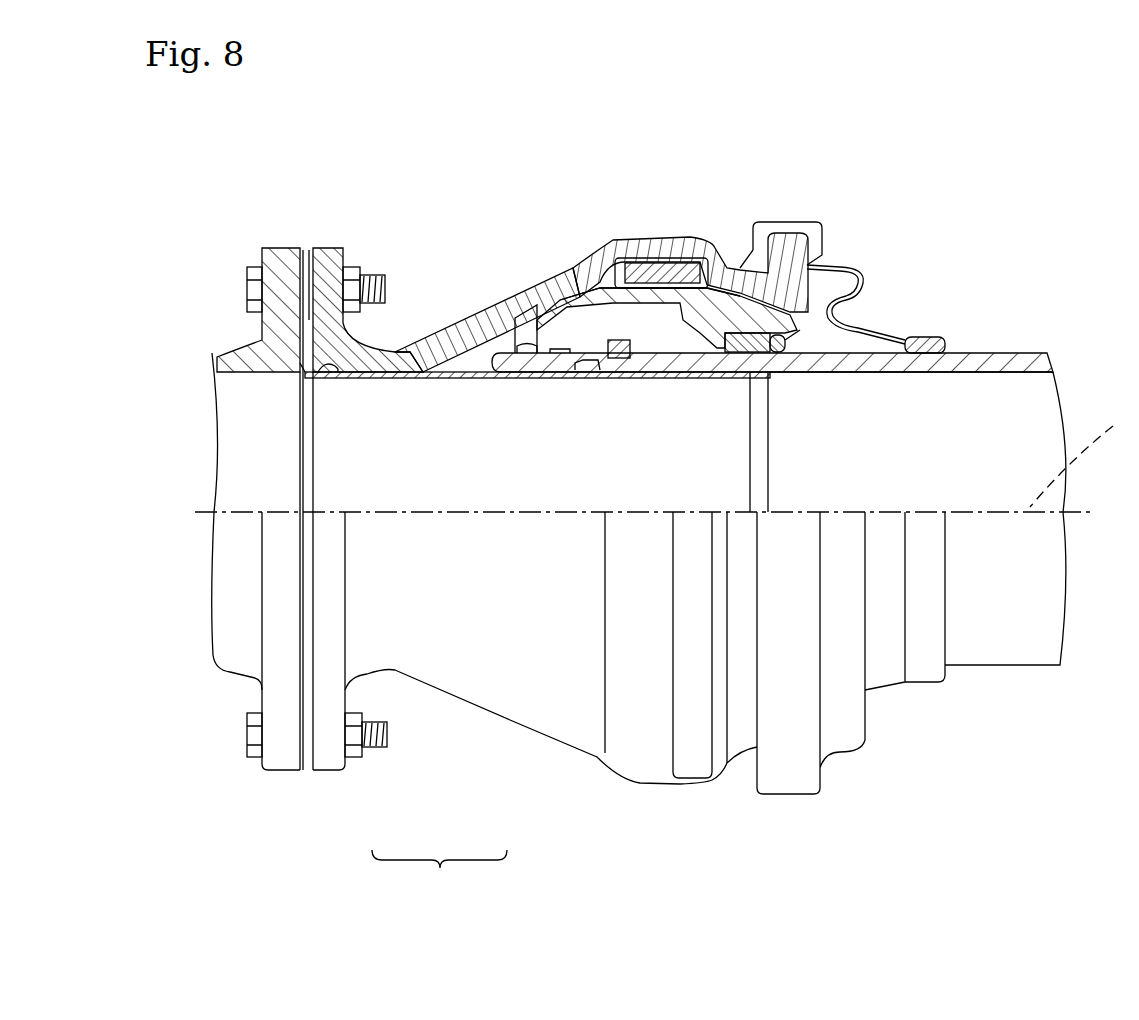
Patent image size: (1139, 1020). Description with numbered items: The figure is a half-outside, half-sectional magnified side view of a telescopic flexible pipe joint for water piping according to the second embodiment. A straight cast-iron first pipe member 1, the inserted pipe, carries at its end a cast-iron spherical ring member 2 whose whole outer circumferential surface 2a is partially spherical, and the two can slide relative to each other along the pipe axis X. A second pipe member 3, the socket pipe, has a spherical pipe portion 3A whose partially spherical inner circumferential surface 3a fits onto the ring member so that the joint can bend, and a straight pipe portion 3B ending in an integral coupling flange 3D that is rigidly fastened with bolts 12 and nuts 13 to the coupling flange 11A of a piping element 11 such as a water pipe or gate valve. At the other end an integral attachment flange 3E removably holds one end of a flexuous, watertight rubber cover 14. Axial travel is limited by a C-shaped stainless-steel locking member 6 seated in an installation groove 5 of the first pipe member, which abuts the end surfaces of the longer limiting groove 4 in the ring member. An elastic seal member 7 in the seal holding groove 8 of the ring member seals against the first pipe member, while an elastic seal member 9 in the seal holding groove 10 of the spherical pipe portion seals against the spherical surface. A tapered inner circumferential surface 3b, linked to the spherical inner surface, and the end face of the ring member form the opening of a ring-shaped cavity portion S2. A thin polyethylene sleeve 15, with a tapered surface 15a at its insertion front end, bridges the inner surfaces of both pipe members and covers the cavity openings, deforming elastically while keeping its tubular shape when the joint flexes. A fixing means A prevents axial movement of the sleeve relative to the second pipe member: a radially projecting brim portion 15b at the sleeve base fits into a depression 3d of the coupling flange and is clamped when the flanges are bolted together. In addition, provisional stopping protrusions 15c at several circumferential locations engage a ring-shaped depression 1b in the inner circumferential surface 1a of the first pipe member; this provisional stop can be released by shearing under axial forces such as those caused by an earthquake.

The first pipe member 1 is at (1013, 353).
The inner circumferential surface 1a is at (930, 373).
The ring-shaped depression 1b is at (547, 357).
The spherical ring member 2 is at (718, 292).
The outer circumferential surface 2a is at (557, 305).
The second pipe member 3 is at (439, 876).
The spherical pipe portion 3A is at (577, 265).
The straight pipe portion 3B is at (390, 350).
The coupling flange 3D is at (322, 256).
The attachment flange 3E is at (790, 233).
The inner circumferential surface 3a is at (492, 318).
The tapered inner circumferential surface 3b is at (437, 377).
The depression 3d is at (330, 373).
The limiting groove 4 is at (670, 342).
The installation groove 5 is at (620, 368).
The locking member 6 is at (637, 358).
The elastic seal member 7 is at (842, 322).
The seal holding groove 8 is at (727, 358).
The elastic seal member 9 is at (655, 268).
The seal holding groove 10 is at (637, 258).
The piping element 11 is at (225, 658).
The coupling flange 11A is at (292, 256).
The bolt 12 is at (248, 270).
The nut 13 is at (357, 270).
The cover 14 is at (847, 262).
The sleeve 15 is at (503, 378).
The tapered surface 15a is at (763, 462).
The brim portion 15b is at (300, 363).
The provisional stopping protrusion 15c is at (590, 372).
The fixing means A is at (298, 379).
The ring-shaped cavity portion S2 is at (472, 360).
The pipe axis X is at (1074, 450).